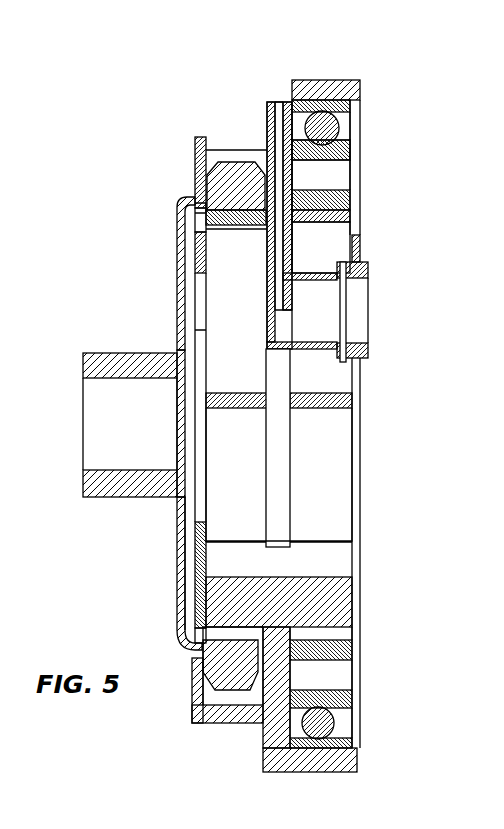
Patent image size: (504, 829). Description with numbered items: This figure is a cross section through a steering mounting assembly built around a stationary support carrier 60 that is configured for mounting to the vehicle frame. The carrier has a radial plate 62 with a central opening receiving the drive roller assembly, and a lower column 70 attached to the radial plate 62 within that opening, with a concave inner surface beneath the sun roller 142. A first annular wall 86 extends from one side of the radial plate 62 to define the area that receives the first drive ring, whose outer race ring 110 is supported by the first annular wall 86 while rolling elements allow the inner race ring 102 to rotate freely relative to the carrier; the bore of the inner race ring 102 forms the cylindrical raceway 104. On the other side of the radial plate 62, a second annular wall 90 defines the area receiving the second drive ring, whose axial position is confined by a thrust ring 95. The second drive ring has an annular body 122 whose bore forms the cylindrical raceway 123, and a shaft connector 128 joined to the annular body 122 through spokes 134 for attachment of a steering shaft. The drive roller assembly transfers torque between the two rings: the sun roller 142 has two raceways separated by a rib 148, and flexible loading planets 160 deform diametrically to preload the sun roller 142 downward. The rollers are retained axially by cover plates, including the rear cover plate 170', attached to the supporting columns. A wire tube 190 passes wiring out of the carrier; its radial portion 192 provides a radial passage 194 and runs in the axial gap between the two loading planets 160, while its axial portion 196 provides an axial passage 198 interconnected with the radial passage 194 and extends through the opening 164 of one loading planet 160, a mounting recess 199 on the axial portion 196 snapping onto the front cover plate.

The stationary support carrier 60 is at (200, 206).
The radial plate 62 is at (262, 748).
The lower column 70 is at (305, 582).
The first annular wall 86 is at (332, 85).
The second annular wall 90 is at (218, 725).
The thrust ring 95 is at (200, 690).
The inner race ring 102 is at (342, 147).
The cylindrical raceway 104 is at (345, 192).
The outer race ring 110 is at (353, 108).
The annular body 122 is at (200, 170).
The cylindrical raceway 123 is at (207, 190).
The shaft connector 128 is at (95, 357).
The spokes 134 is at (183, 268).
The sun roller 142 is at (333, 480).
The rib 148 is at (268, 474).
The loading planets 160 is at (350, 215).
The opening 164 is at (333, 248).
The rear cover plate 170' is at (139, 563).
The wire tube 190 is at (266, 97).
The radial portion 192 is at (266, 126).
The radial passage 194 is at (280, 100).
The axial portion 196 is at (312, 350).
The axial passage 198 is at (378, 317).
The mounting recess 199 is at (368, 263).